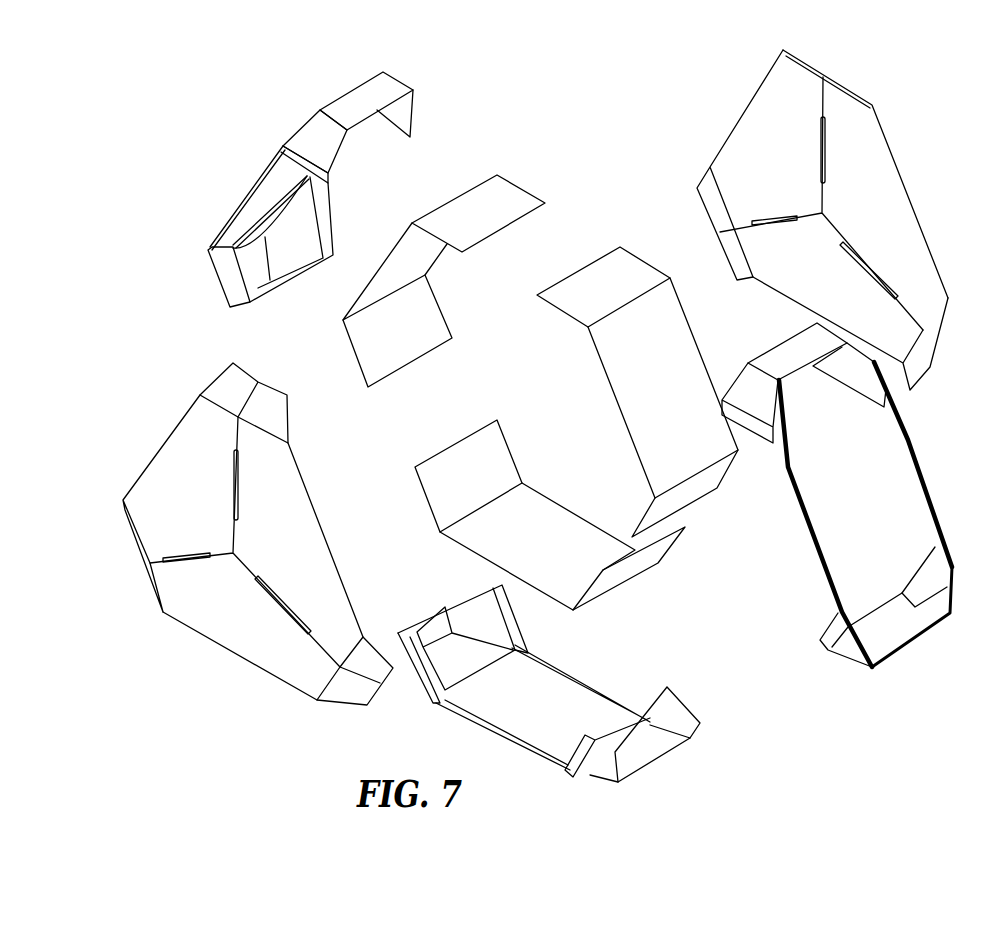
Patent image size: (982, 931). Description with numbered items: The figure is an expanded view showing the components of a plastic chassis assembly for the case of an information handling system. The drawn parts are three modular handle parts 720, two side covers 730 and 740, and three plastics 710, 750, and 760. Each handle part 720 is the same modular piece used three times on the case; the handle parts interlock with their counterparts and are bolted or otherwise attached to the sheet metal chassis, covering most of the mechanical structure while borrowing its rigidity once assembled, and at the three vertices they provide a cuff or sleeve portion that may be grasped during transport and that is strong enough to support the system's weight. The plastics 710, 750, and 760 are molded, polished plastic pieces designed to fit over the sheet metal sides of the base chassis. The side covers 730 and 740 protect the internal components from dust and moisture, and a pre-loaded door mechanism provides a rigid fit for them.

The plastic 710 is at (692, 492).
The handle part 720 is at (340, 108).
The side cover 730 is at (750, 120).
The side cover 740 is at (235, 388).
The plastic 750 is at (502, 200).
The plastic 760 is at (432, 467).